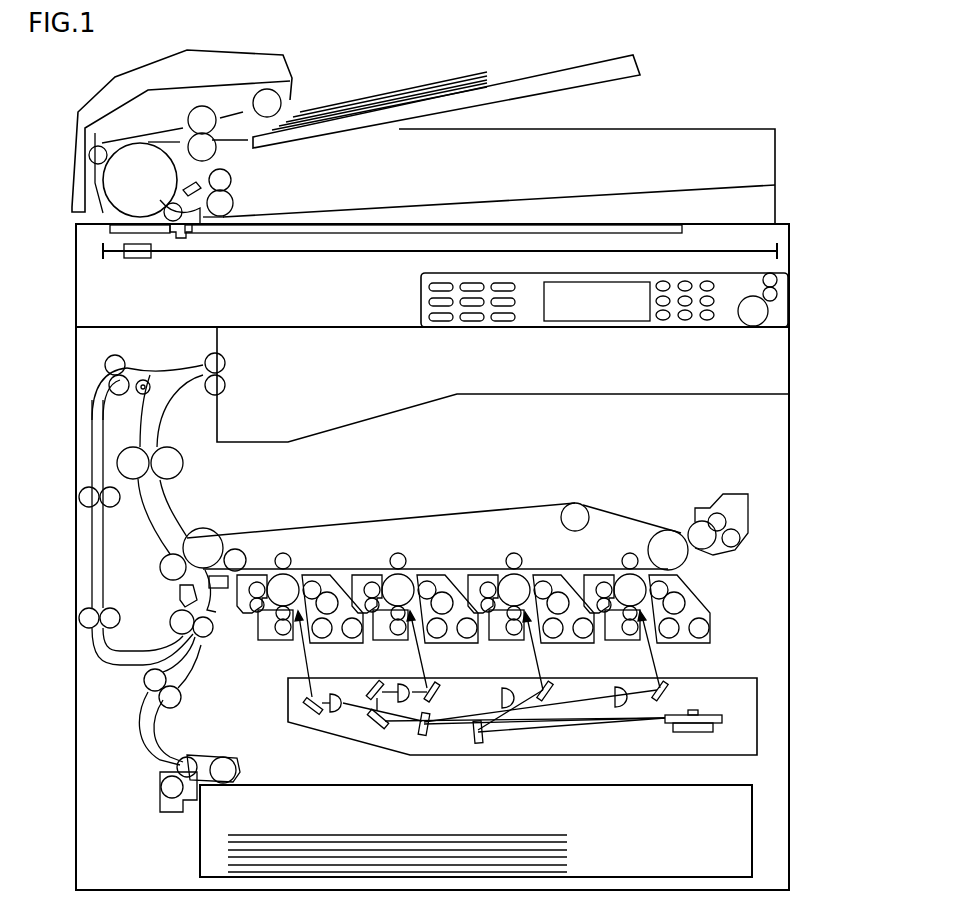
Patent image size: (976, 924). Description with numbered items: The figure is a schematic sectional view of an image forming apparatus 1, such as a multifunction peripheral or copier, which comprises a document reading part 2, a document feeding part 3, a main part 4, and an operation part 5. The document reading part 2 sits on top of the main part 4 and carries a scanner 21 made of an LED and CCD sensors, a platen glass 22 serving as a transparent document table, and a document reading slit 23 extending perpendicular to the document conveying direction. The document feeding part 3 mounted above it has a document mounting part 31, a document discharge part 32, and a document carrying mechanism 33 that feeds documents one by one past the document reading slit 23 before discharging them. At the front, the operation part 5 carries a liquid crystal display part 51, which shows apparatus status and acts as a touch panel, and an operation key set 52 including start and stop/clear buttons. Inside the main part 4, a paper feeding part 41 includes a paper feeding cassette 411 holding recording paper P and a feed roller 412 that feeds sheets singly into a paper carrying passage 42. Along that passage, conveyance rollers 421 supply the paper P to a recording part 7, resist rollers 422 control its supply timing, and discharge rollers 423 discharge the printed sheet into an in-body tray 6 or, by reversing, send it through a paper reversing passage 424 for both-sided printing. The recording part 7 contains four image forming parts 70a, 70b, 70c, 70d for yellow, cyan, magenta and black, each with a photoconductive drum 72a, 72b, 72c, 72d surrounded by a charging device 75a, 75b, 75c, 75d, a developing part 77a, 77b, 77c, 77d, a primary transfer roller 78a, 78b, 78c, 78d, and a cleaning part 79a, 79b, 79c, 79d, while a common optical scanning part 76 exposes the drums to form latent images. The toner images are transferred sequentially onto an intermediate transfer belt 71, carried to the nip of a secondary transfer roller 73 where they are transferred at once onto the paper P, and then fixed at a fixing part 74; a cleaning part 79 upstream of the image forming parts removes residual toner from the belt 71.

The image forming apparatus 1 is at (723, 77).
The document reading part 2 is at (66, 238).
The document feeding part 3 is at (434, 54).
The main part 4 is at (806, 441).
The operation part 5 is at (806, 295).
The in-body tray 6 is at (345, 420).
The recording part 7 is at (771, 520).
The scanner 21 is at (138, 259).
The platen glass 22 is at (604, 229).
The document reading slit 23 is at (148, 232).
The document mounting part 31 is at (505, 82).
The document discharge part 32 is at (505, 206).
The document carrying mechanism 33 is at (112, 80).
The paper feeding part 41 is at (776, 797).
The paper carrying passage 42 is at (206, 682).
The liquid crystal display part 51 is at (605, 316).
The operation key set 52 is at (686, 304).
The image forming part 70a is at (252, 645).
The image forming part 70b is at (417, 607).
The image forming part 70c is at (532, 608).
The image forming part 70d is at (664, 607).
The intermediate transfer belt 71 is at (315, 525).
The photoconductive drum 72a is at (283, 590).
The photoconductive drum 72b is at (398, 590).
The photoconductive drum 72c is at (514, 590).
The photoconductive drum 72d is at (630, 590).
The secondary transfer roller 73 is at (168, 574).
The fixing part 74 is at (184, 465).
The charging device 75a is at (281, 633).
The charging device 75b is at (387, 641).
The charging device 75c is at (503, 641).
The charging device 75d is at (618, 641).
The optical scanning part 76 is at (758, 702).
The developing part 77a is at (325, 583).
The developing part 77b is at (449, 592).
The developing part 77c is at (564, 592).
The developing part 77d is at (696, 609).
The primary transfer roller 78a is at (286, 556).
The primary transfer roller 78b is at (409, 547).
The primary transfer roller 78c is at (525, 547).
The primary transfer roller 78d is at (640, 547).
The cleaning part 79 is at (731, 496).
The cleaning part 79a is at (257, 583).
The cleaning part 79b is at (374, 573).
The cleaning part 79c is at (489, 573).
The cleaning part 79d is at (605, 573).
The paper feeding cassette 411 is at (752, 826).
The feed roller 412 is at (225, 768).
The conveyance rollers 421 is at (183, 703).
The resist rollers 422 is at (210, 637).
The discharge rollers 423 is at (225, 363).
The paper reversing passage 424 is at (88, 547).
The recording paper P is at (457, 841).